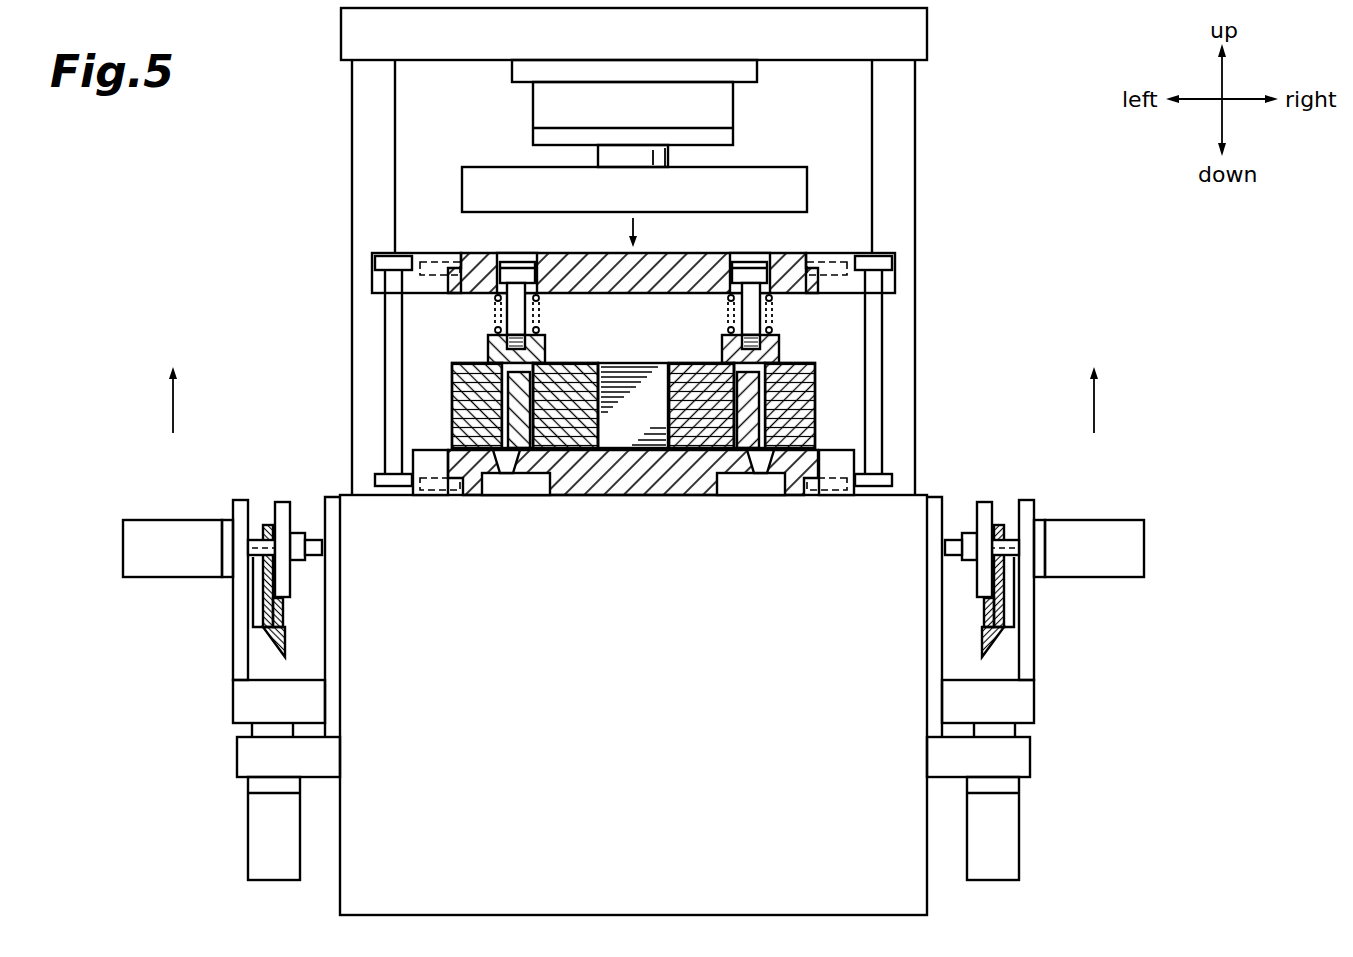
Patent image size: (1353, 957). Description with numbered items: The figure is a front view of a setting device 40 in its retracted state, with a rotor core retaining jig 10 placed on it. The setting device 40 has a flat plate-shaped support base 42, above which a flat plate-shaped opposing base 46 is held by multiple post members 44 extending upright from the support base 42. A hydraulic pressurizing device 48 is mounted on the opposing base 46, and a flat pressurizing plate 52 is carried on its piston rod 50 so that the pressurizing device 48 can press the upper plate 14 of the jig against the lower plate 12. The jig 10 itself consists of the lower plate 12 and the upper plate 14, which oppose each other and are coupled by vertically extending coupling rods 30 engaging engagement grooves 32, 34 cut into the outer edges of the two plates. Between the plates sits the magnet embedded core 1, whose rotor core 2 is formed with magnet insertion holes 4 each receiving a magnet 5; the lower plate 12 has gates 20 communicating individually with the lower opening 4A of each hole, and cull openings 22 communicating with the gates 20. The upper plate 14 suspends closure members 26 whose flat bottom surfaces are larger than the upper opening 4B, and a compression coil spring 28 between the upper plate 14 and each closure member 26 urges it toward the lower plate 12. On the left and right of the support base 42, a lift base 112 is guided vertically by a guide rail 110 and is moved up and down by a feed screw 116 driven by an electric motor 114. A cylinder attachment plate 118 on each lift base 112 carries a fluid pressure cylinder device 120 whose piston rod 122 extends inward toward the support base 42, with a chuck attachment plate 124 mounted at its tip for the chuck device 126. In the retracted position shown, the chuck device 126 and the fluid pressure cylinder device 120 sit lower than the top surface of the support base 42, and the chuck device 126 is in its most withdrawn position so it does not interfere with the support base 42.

The magnet embedded core 1 is at (638, 349).
The rotor core 2 is at (688, 373).
The magnet insertion hole 4 is at (505, 420).
The lower opening 4A is at (535, 443).
The upper opening 4B is at (545, 345).
The magnet 5 is at (510, 387).
The rotor core retaining jig 10 is at (837, 242).
The lower plate 12 is at (590, 490).
The upper plate 14 is at (697, 262).
The gate 20 is at (505, 460).
The cull opening 22 is at (542, 478).
The closure member 26 is at (485, 352).
The compression coil spring 28 is at (768, 288).
The coupling rod 30 is at (395, 357).
The engagement groove 32 is at (430, 478).
The engagement groove 34 is at (417, 285).
The setting device 40 is at (942, 186).
The support base 42 is at (915, 663).
The post member 44 is at (363, 120).
The opposing base 46 is at (917, 33).
The pressurizing device 48 is at (722, 107).
The piston rod 50 is at (656, 157).
The pressurizing plate 52 is at (480, 178).
The guide rail 110 is at (328, 657).
The lift base 112 is at (238, 700).
The electric motor 114 is at (258, 820).
The feed screw 116 is at (265, 605).
The cylinder attachment plate 118 is at (243, 507).
The fluid pressure cylinder device 120 is at (170, 528).
The piston rod 122 is at (257, 542).
The chuck attachment plate 124 is at (285, 512).
The chuck device 126 is at (312, 567).